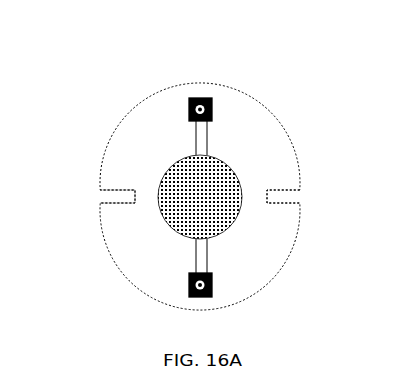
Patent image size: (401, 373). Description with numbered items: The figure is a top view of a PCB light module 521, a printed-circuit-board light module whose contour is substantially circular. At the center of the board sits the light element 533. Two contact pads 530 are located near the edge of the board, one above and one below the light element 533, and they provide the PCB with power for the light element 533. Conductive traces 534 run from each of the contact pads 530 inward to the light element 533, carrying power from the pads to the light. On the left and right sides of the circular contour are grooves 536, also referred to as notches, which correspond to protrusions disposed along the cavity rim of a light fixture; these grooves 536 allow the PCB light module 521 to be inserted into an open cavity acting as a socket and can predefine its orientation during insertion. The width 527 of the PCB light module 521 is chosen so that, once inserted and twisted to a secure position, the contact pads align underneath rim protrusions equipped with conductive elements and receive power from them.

The PCB light module 521 is at (208, 27).
The width 527 is at (162, 118).
The contact pads 530 is at (203, 97).
The light element 533 is at (205, 186).
The conductive traces 534 is at (197, 150).
The grooves 536 is at (100, 191).